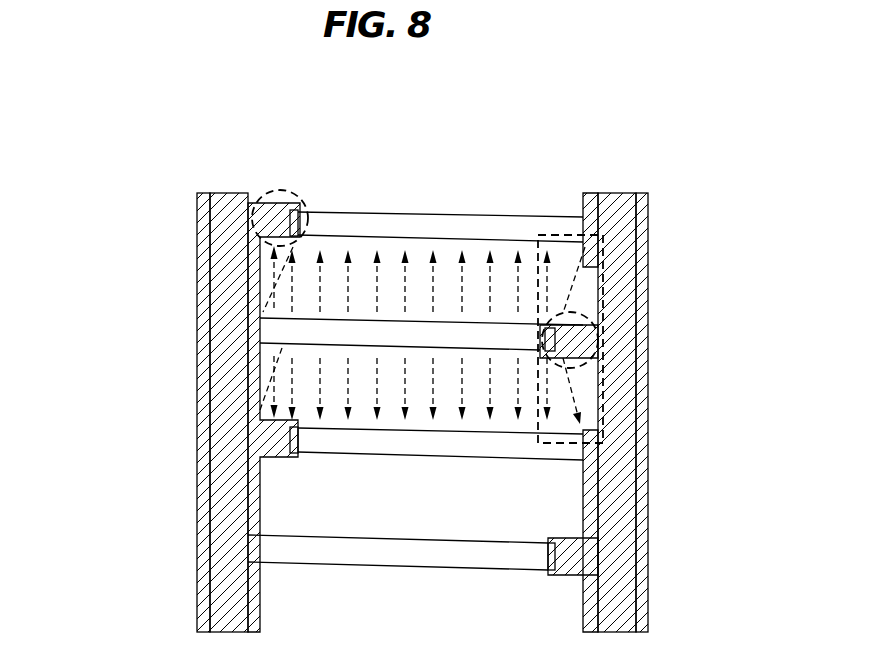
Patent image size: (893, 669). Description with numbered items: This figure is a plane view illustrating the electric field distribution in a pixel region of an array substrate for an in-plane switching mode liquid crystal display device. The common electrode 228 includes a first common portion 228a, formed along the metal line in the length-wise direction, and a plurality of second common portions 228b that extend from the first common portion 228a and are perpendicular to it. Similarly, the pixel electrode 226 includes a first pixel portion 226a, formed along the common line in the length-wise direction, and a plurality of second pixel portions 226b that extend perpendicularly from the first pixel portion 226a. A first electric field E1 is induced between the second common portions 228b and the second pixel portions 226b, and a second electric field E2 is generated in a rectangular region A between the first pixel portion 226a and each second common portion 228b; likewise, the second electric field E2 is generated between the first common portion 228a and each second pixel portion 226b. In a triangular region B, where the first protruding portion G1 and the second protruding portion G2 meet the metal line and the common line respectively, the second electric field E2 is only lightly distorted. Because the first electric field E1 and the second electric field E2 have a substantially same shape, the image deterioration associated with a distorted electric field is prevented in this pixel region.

The pixel electrode 226 is at (585, 348).
The first pixel portion 226a is at (620, 192).
The second pixel portions 226b is at (634, 205).
The common electrode 228 is at (172, 412).
The first common portion 228a is at (246, 372).
The second common portions 228b is at (260, 313).
The first protruding portion G1 is at (286, 180).
The second protruding portion G2 is at (615, 338).
The first electric field E1 is at (428, 278).
The second electric field E2 is at (540, 280).
The triangular region B is at (604, 274).
The rectangular region A is at (378, 348).